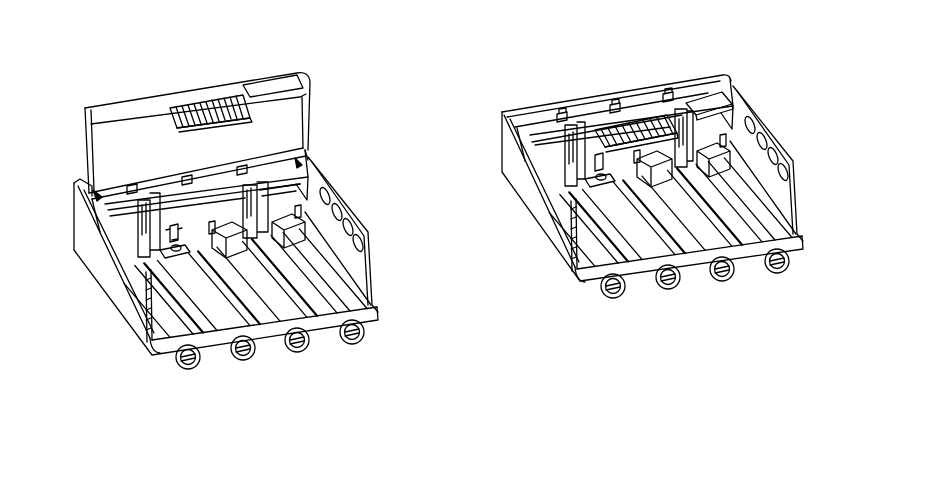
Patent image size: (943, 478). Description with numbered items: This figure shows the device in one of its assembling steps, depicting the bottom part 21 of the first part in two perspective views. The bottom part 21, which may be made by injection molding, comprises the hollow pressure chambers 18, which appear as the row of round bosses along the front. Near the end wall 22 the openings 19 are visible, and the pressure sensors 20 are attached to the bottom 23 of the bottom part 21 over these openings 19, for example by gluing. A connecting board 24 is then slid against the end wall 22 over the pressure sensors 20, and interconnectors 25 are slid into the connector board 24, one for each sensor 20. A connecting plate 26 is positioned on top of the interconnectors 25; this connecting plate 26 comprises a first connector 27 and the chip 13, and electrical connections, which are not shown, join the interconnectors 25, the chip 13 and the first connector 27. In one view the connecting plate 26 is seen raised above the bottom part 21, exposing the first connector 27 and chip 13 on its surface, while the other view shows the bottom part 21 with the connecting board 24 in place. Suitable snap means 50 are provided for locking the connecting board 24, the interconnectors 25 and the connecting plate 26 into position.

The chip 13 is at (273, 84).
The pressure chambers 18 is at (351, 348).
The openings 19 is at (172, 230).
The pressure sensors 20 is at (290, 226).
The bottom part 21 is at (383, 277).
The end wall 22 is at (115, 190).
The bottom 23 is at (697, 212).
The connector board 24 is at (285, 188).
The interconnectors 25 is at (269, 157).
The connecting plate 26 is at (300, 78).
The first connector 27 is at (200, 105).
The snap means 50 is at (615, 70).